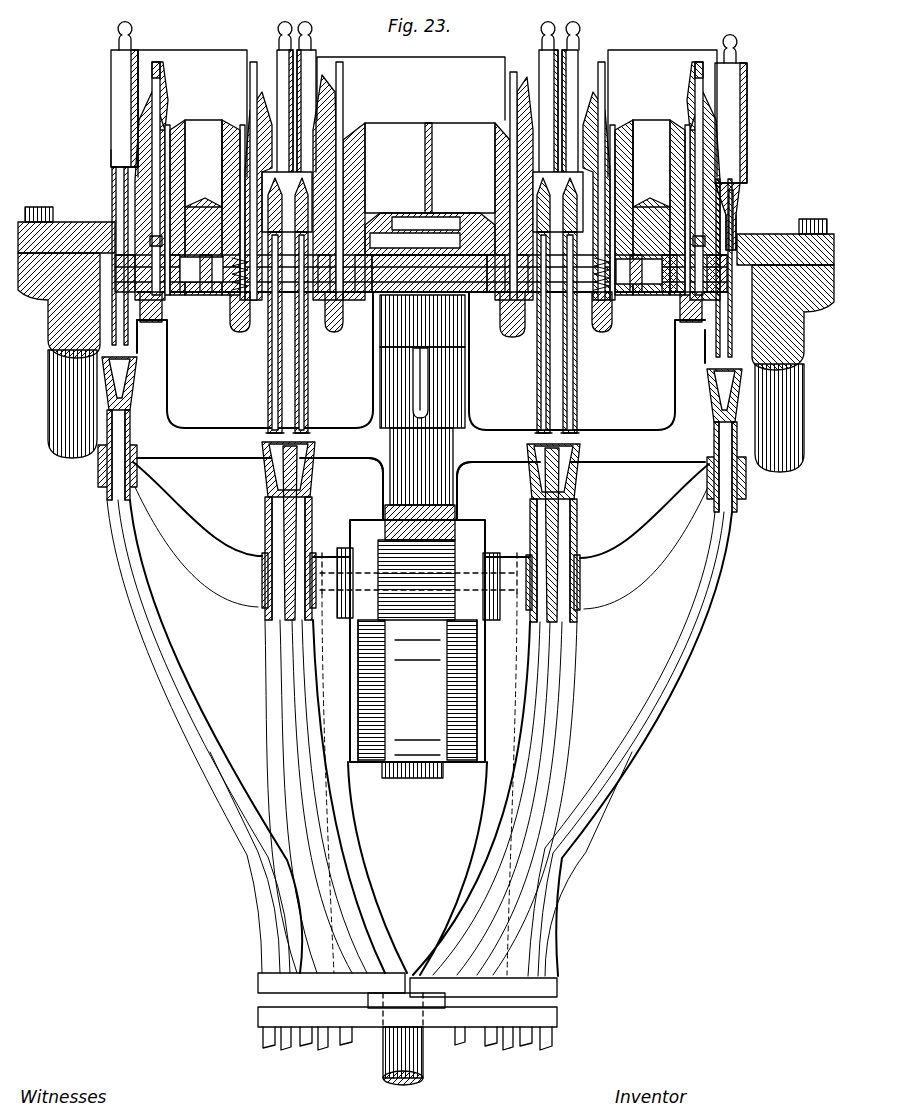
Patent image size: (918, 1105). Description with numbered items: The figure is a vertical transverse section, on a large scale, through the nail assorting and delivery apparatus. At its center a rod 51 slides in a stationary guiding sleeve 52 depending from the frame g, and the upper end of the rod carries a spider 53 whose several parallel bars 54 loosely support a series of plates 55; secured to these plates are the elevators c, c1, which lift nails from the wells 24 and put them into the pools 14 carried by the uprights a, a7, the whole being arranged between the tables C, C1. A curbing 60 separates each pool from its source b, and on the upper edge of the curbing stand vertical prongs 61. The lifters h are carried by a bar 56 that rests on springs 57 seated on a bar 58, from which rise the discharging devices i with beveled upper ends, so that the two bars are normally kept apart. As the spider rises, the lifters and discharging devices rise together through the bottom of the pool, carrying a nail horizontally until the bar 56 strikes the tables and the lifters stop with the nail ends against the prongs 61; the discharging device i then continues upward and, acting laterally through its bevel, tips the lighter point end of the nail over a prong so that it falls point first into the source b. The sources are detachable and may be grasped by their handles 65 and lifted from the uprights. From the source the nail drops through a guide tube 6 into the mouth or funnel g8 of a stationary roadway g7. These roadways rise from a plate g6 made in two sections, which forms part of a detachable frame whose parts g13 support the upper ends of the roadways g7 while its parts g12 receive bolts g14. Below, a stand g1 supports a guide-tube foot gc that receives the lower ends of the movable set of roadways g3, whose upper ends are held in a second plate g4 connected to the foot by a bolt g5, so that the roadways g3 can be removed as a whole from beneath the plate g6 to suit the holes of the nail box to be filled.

The handles 65 is at (733, 56).
The vertical prongs 61 is at (692, 92).
The pools 14 is at (680, 165).
The curbing 60 is at (518, 115).
The bar 56 is at (625, 275).
The parallel bars 54 is at (655, 322).
The plates 55 is at (660, 295).
The springs 57 is at (600, 335).
The bar 58 is at (648, 332).
The spider 53 is at (382, 378).
The rod 51 is at (445, 488).
The guiding sleeve 52 is at (418, 764).
The wells 24 is at (427, 235).
The guide tube 6 is at (732, 333).
The discharging devices i is at (690, 78).
The sources b is at (737, 115).
The lifters h is at (140, 110).
The uprights a is at (112, 143).
The elevators c is at (427, 207).
The elevator c1 is at (668, 183).
The table C is at (100, 222).
The table C1 is at (752, 235).
The upright a7 is at (740, 165).
The frame g is at (795, 428).
The movable roadways g3 is at (519, 1052).
The funnel g8 is at (582, 450).
The stand g1 is at (262, 478).
The guide-tube foot gc is at (365, 466).
The bolts g14 is at (513, 568).
The frame parts g13 is at (622, 592).
The frame parts g12 is at (510, 655).
The stationary roadways g7 is at (575, 840).
The plate g6 is at (557, 987).
The second plate g4 is at (258, 1012).
The bolt g5 is at (392, 1080).